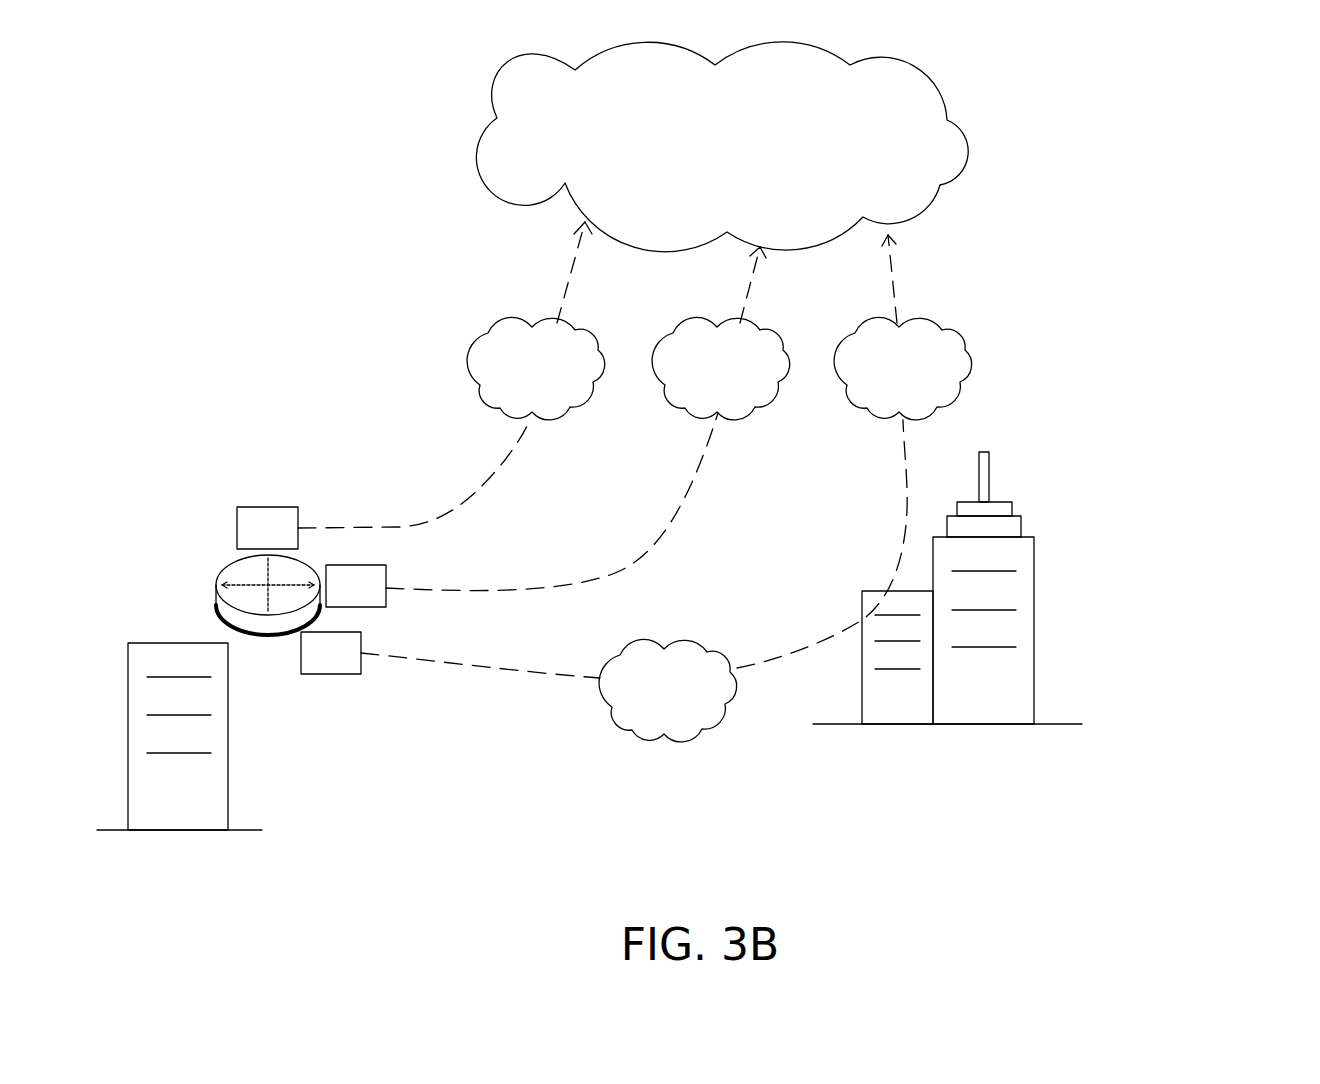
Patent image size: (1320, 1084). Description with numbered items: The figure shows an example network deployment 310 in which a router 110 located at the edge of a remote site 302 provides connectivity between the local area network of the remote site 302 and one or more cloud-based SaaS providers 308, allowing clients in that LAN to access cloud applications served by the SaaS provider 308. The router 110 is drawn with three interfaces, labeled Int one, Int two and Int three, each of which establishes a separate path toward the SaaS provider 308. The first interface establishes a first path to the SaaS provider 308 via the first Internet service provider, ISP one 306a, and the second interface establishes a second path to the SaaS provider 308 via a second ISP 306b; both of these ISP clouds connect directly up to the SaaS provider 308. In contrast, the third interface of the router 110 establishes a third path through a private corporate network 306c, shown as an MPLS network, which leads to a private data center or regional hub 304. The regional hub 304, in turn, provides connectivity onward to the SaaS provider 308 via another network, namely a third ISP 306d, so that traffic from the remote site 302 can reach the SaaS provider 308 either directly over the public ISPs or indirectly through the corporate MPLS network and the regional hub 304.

The network deployment 310 is at (1226, 120).
The SaaS provider 308 is at (715, 181).
The ISP 1 306a is at (513, 395).
The second ISP 306b is at (698, 395).
The private corporate network 306c is at (646, 717).
The third ISP 306d is at (880, 395).
The router 110 is at (215, 595).
The remote site 302 is at (179, 785).
The regional hub 304 is at (947, 636).